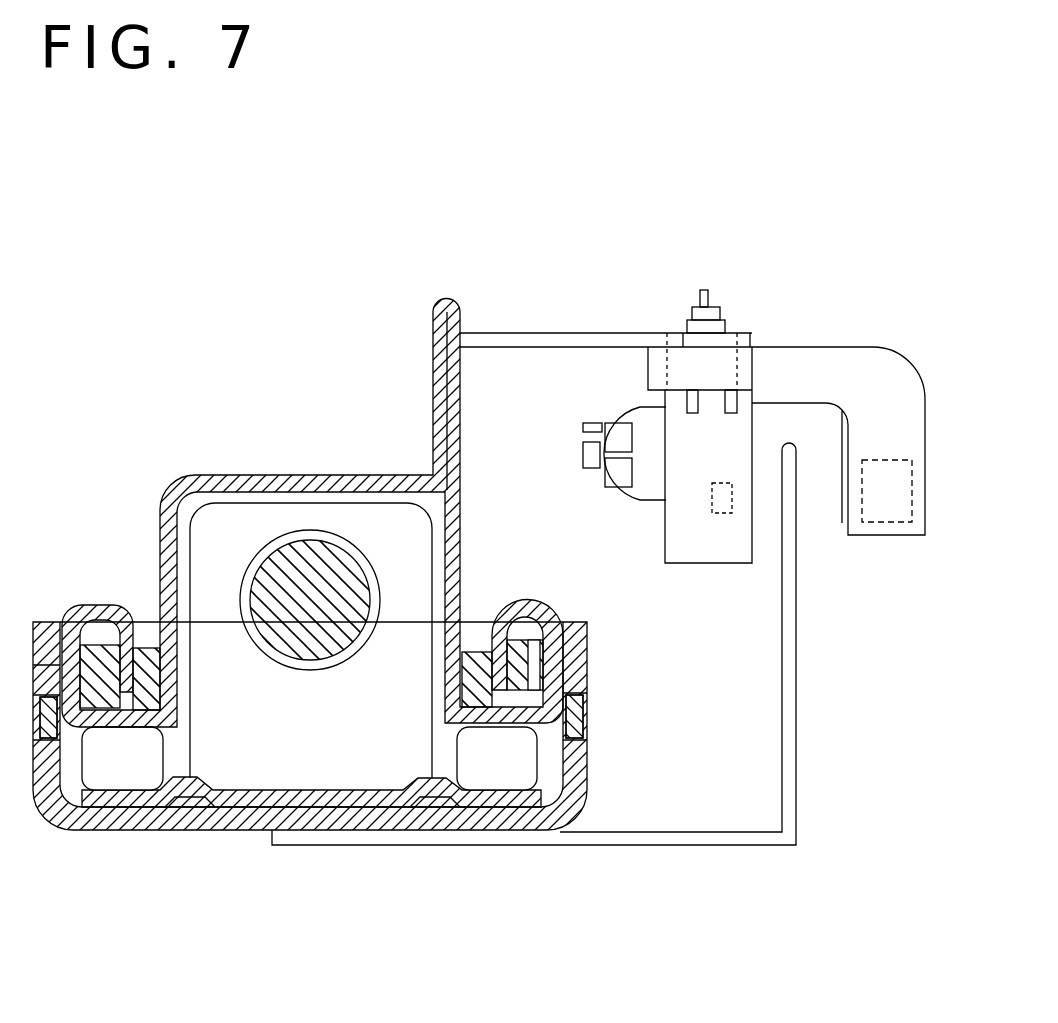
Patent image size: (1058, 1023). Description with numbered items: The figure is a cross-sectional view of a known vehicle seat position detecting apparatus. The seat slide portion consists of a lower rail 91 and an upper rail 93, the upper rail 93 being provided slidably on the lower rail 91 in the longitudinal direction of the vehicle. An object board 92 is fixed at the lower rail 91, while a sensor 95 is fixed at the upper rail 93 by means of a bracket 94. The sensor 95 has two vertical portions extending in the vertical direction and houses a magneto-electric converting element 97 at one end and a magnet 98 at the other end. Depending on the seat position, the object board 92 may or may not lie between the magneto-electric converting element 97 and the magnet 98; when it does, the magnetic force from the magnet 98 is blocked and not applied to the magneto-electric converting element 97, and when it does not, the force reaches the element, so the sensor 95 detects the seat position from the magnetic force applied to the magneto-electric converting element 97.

The lower rail 91 is at (587, 752).
The object board 92 is at (797, 710).
The upper rail 93 is at (462, 490).
The bracket 94 is at (515, 333).
The sensor 95 is at (888, 352).
The magneto-electric converting element 97 is at (722, 513).
The magnet 98 is at (878, 535).